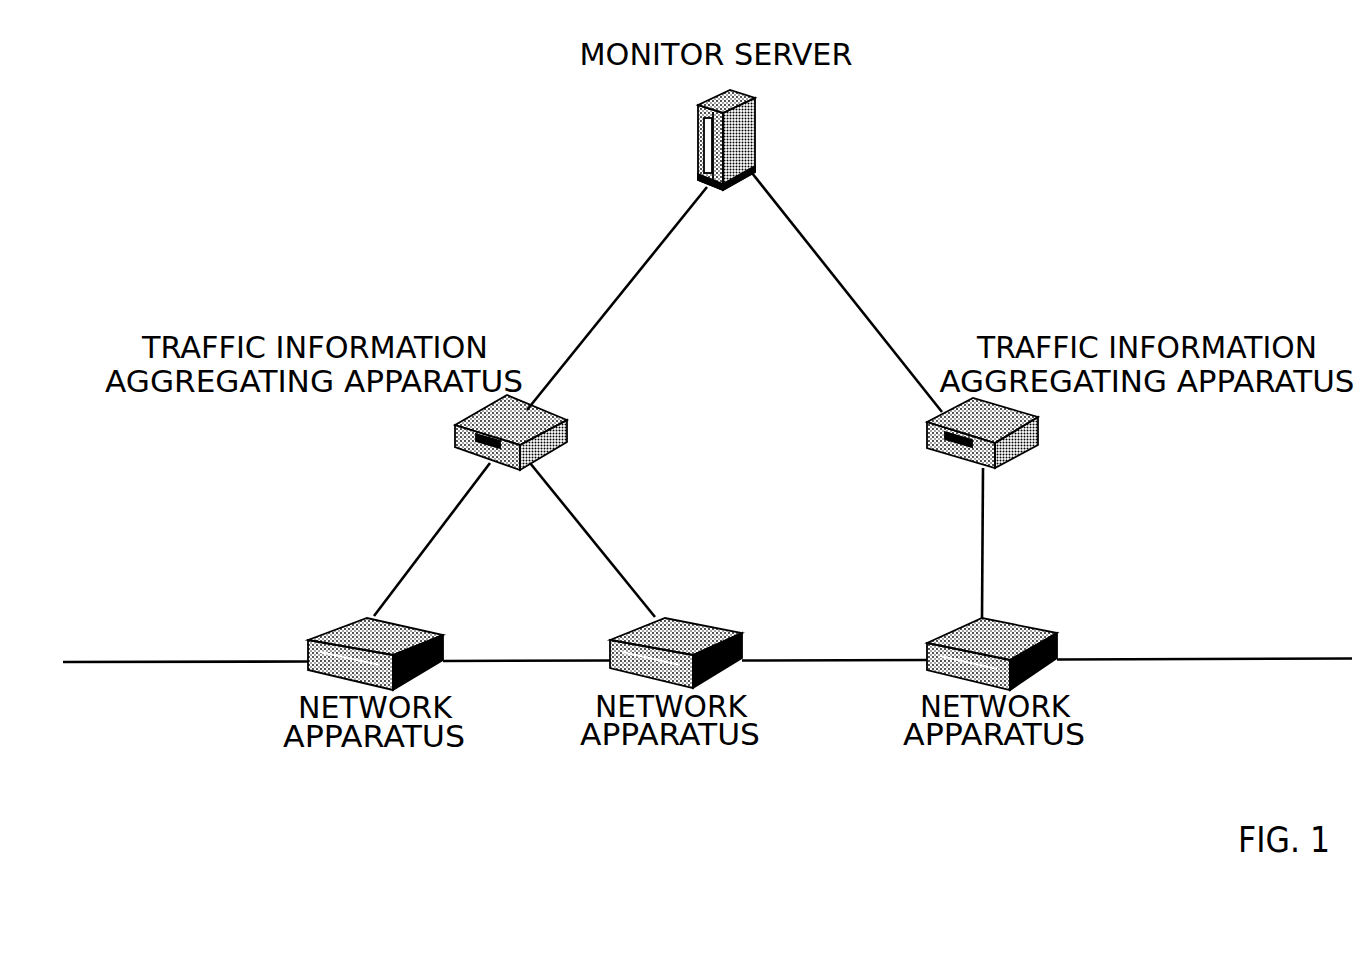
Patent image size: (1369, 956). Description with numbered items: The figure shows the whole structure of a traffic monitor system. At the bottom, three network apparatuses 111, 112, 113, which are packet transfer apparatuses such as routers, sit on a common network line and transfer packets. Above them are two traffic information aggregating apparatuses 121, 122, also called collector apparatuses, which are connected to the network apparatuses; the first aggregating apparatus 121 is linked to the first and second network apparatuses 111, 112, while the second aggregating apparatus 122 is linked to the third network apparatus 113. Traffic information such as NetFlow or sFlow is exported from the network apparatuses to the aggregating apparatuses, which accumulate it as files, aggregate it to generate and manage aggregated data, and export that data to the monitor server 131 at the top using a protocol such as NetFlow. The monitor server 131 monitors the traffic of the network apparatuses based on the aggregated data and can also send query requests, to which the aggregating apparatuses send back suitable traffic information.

The monitor server 131 is at (703, 153).
The traffic information aggregating apparatus 121 is at (462, 437).
The traffic information aggregating apparatus 122 is at (930, 435).
The network apparatus 111 is at (315, 647).
The network apparatus 112 is at (610, 647).
The network apparatus 113 is at (927, 647).